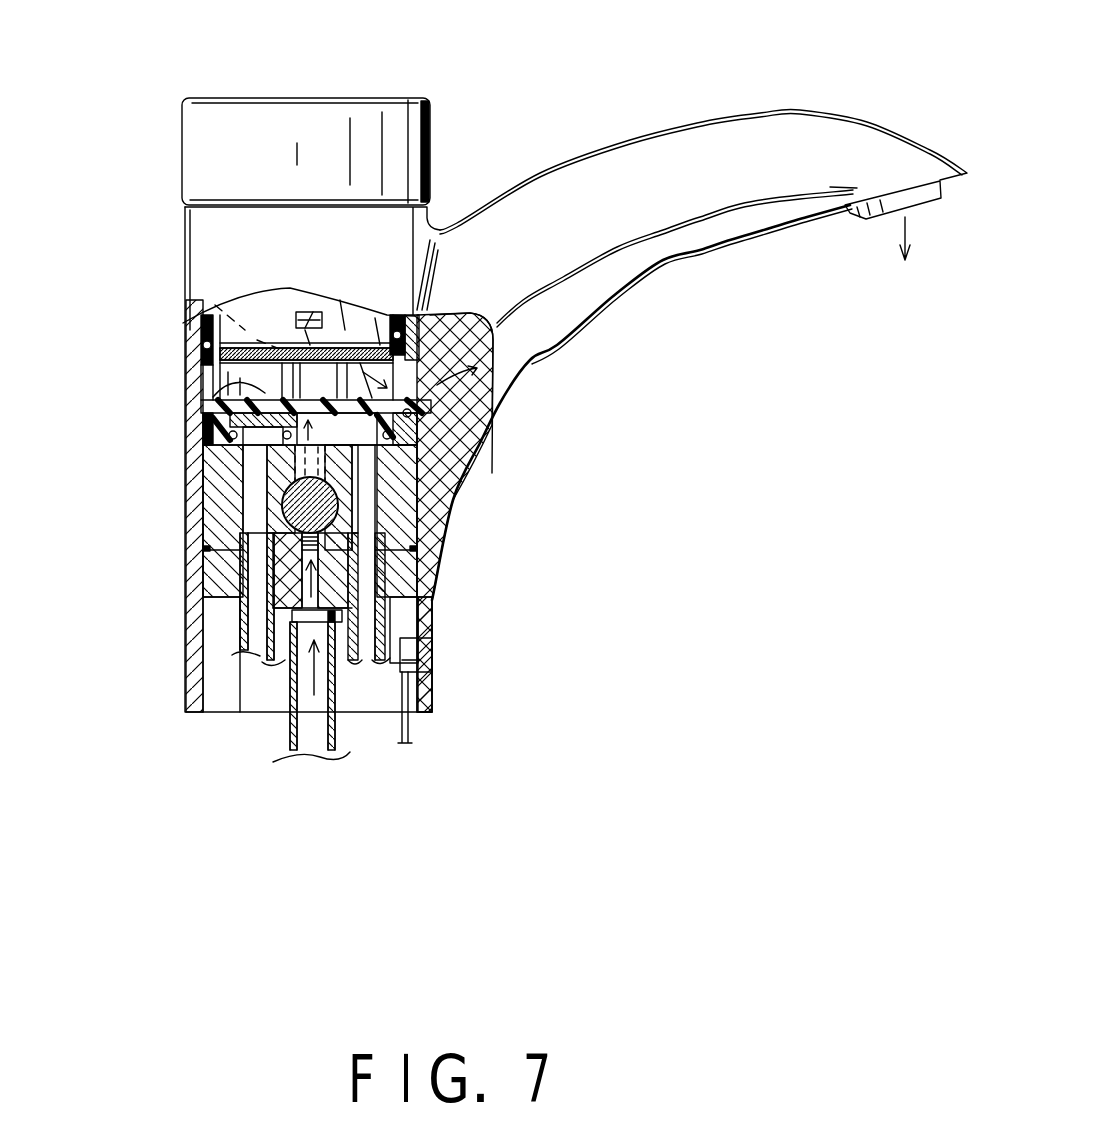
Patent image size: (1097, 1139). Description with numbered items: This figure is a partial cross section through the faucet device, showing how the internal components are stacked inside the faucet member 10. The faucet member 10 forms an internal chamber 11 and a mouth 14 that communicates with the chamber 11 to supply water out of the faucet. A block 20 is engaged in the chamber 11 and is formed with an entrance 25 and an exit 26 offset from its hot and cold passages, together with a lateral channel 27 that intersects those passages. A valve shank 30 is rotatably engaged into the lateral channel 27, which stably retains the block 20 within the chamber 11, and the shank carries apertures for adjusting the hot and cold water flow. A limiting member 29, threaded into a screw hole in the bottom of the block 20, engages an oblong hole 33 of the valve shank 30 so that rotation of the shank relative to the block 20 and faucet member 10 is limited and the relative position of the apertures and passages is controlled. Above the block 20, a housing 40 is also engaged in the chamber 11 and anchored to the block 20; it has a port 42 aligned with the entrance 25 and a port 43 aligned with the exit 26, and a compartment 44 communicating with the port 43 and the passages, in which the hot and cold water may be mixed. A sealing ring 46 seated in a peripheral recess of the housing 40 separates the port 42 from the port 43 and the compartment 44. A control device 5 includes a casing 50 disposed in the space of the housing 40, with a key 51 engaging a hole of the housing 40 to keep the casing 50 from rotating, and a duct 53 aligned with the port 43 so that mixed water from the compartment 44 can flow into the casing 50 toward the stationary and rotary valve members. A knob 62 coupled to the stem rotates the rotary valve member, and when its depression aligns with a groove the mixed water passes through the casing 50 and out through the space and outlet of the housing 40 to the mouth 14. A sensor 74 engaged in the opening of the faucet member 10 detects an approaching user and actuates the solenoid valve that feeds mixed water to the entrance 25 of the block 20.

The control device 5 is at (305, 10).
The faucet member 10 is at (437, 533).
The chamber 11 is at (433, 560).
The mouth 14 is at (868, 247).
The block 20 is at (213, 517).
The entrance 25 is at (250, 527).
The exit 26 is at (423, 573).
The channel 27 is at (235, 567).
The limiting member 29 is at (233, 663).
The valve shank 30 is at (437, 505).
The oblong hole 33 is at (250, 600).
The housing 40 is at (440, 432).
The port 42 is at (213, 378).
The port 43 is at (215, 320).
The compartment 44 is at (350, 497).
The sealing ring 46 is at (215, 468).
The casing 50 is at (282, 297).
The key 51 is at (265, 655).
The duct 53 is at (300, 362).
The knob 62 is at (240, 115).
The sensor 74 is at (420, 657).